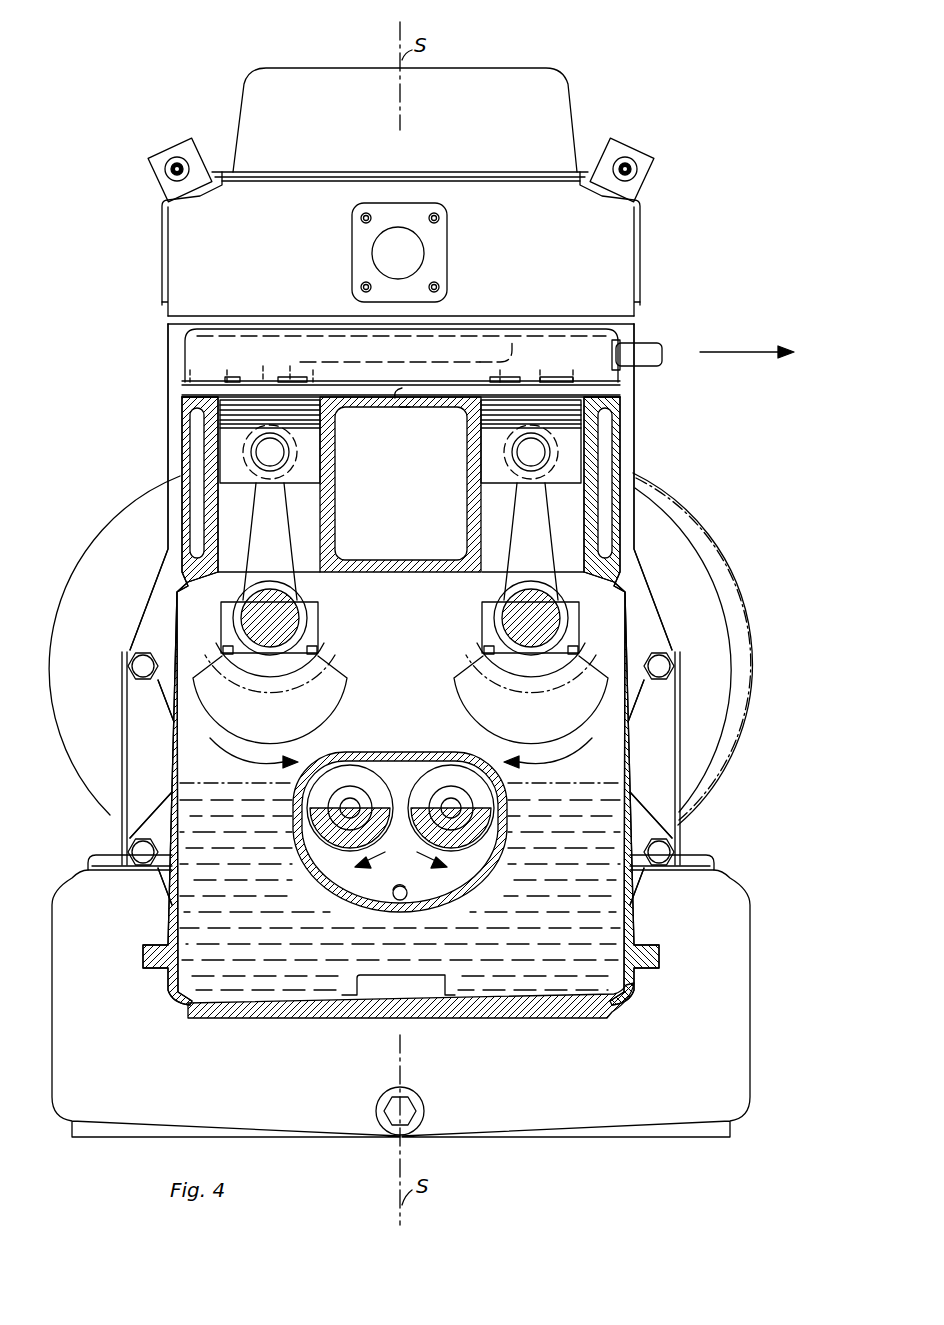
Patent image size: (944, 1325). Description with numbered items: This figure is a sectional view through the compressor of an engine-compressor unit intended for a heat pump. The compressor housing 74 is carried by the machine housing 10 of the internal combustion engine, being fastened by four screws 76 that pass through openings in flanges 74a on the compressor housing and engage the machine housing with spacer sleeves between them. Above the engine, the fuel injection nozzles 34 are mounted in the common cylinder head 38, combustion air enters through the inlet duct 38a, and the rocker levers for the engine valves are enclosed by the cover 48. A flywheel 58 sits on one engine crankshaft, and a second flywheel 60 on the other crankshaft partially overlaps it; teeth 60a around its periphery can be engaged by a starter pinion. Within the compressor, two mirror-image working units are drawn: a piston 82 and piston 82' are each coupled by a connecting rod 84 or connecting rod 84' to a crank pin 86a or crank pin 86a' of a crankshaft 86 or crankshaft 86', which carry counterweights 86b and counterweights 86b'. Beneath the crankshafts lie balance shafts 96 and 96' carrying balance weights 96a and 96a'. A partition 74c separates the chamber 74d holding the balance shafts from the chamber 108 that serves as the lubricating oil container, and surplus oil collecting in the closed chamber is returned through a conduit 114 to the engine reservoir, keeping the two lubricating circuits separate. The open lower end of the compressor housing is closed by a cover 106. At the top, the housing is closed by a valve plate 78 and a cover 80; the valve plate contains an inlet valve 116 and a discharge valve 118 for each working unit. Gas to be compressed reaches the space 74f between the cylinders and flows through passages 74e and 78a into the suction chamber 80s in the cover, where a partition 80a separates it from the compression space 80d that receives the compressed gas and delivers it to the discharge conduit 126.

The machine housing 10 is at (176, 447).
The fuel injection nozzle 34 is at (182, 145).
The cylinder head 38 is at (185, 265).
The inlet duct 38a is at (415, 262).
The cover 48 is at (247, 97).
The flywheel 58 is at (100, 530).
The flywheel 60 is at (690, 535).
The teeth 60a is at (718, 570).
The compressor housing 74 is at (620, 462).
The cylinder / flange 74a is at (136, 636).
The partition 74c is at (333, 757).
The chamber 74d is at (345, 875).
The passage 74e is at (405, 405).
The space 74f is at (401, 483).
The screws 76 is at (138, 682).
The valve plate 78 is at (310, 388).
The passage 78a is at (395, 398).
The cover 80 is at (598, 365).
The partition 80a is at (349, 368).
The compression space 80d is at (401, 346).
The suction chamber 80s is at (468, 361).
The piston 82 is at (300, 441).
The piston 82' is at (505, 441).
The connecting rod 84 is at (301, 543).
The connecting rod 84' is at (499, 543).
The crankshaft 86 is at (261, 637).
The crankshaft 86' is at (543, 637).
The crank pin 86a is at (308, 618).
The crank pin 86a' is at (495, 618).
The counterweights 86b is at (290, 694).
The counterweights 86b' is at (513, 694).
The balance shaft 96 is at (350, 785).
The balance shaft 96' is at (451, 785).
The balance weight 96a is at (318, 828).
The balance weight 96a' is at (487, 828).
The cover 106 is at (628, 995).
The chamber 108 is at (550, 975).
The conduit 114 is at (405, 891).
The inlet valve 116 is at (296, 380).
The discharge valve 118 is at (228, 380).
The discharge conduit 126 is at (655, 342).